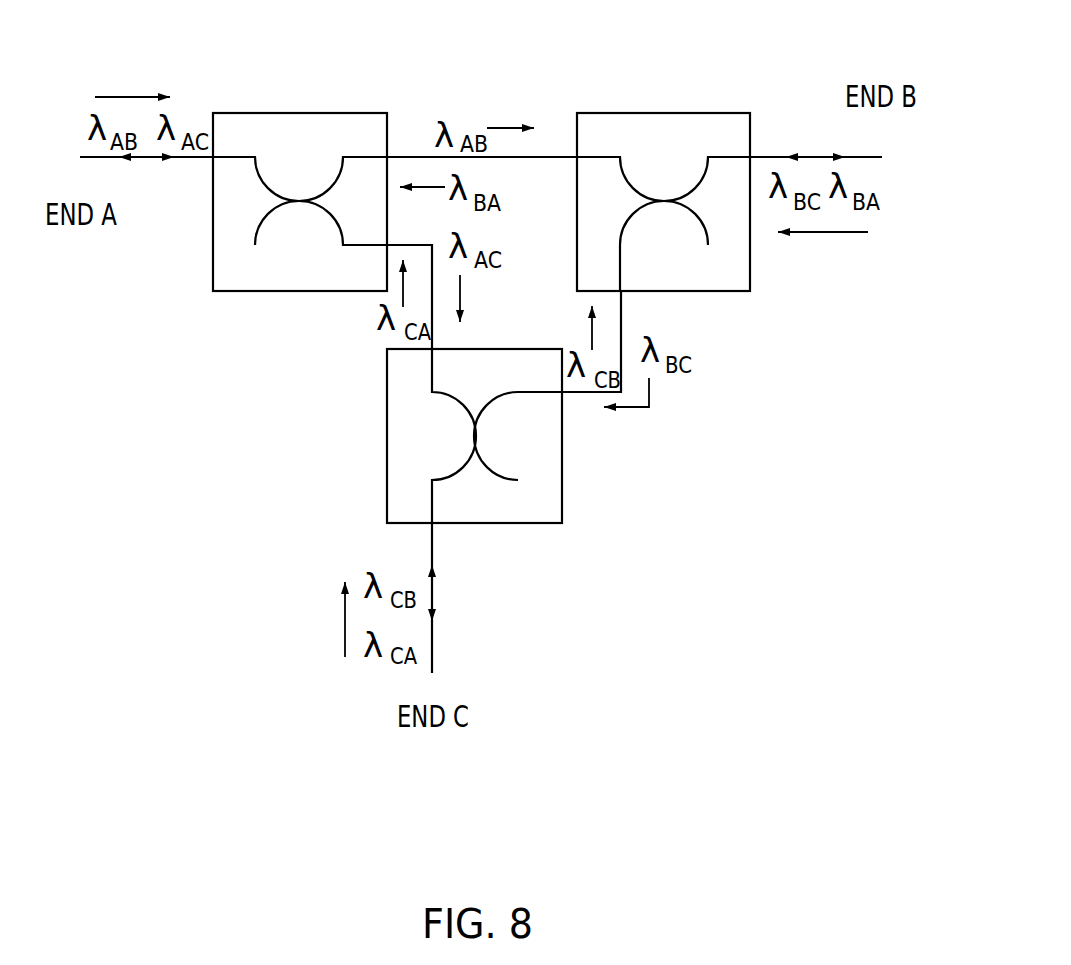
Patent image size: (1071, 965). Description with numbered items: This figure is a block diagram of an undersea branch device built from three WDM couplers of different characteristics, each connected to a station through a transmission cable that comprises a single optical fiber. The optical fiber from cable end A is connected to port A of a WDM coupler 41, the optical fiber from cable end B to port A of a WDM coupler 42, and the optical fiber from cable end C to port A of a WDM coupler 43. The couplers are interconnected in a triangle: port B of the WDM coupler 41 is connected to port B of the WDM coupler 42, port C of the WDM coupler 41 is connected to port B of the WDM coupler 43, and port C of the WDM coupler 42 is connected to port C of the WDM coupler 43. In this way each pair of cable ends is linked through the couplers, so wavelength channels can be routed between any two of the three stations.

The WDM coupler 41 is at (283, 113).
The WDM coupler 42 is at (650, 113).
The WDM coupler 43 is at (487, 523).